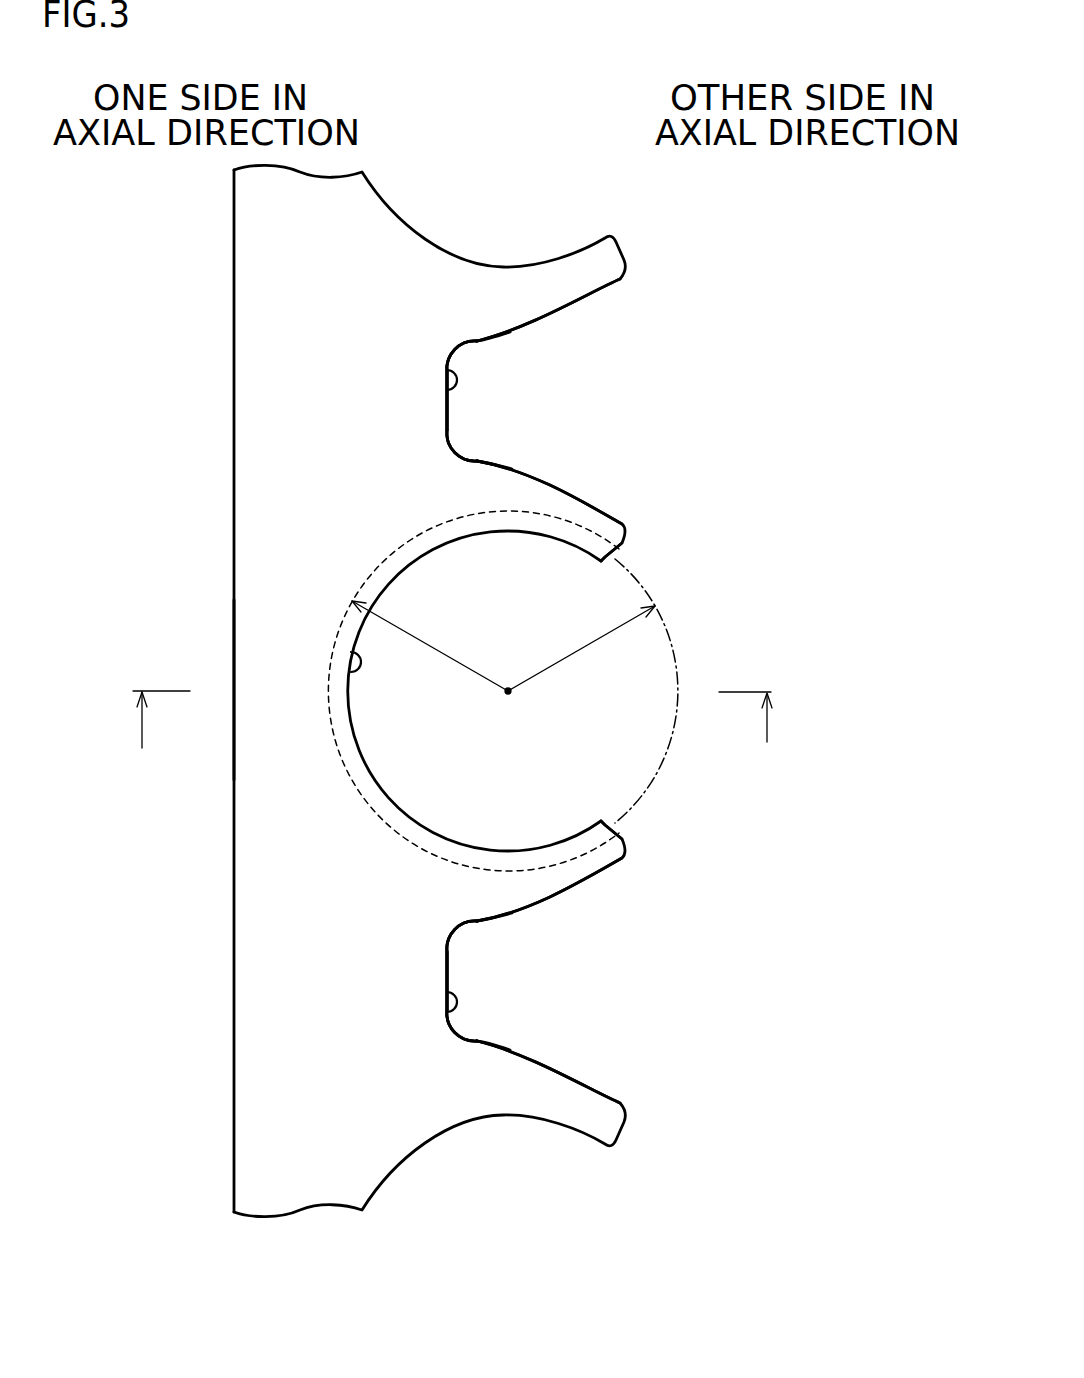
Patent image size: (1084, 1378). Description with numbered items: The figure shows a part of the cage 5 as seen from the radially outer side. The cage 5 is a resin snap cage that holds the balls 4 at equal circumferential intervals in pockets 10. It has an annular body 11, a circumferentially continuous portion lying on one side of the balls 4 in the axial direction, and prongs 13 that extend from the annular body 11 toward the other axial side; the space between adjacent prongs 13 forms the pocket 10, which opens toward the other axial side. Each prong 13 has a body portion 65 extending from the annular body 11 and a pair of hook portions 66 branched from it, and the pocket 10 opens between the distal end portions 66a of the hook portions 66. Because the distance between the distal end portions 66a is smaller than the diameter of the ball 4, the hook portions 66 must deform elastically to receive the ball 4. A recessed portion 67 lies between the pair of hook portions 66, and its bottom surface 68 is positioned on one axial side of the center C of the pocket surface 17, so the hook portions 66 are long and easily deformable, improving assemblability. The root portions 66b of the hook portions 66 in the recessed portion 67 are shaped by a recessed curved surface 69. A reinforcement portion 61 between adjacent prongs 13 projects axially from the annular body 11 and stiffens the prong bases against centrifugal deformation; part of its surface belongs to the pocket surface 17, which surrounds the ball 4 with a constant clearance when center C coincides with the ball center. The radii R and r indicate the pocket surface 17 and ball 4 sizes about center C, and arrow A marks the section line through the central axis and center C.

The ball 4 is at (667, 760).
The cage 5 is at (232, 881).
The pocket 10 is at (636, 672).
The annular body 11 is at (265, 663).
The prong 13 is at (641, 332).
The pocket surface 17 is at (338, 745).
The reinforcement portion 61 is at (350, 653).
The body portion 65 is at (427, 398).
The hook portion 66 is at (543, 308).
The distal end portion 66a is at (602, 562).
The root portion 66b is at (465, 343).
The recessed portion 67 is at (484, 382).
The bottom surface 68 is at (447, 372).
The recessed curved surface 69 is at (487, 340).
The radius R is at (430, 646).
The radius r is at (581, 648).
The center of the pocket surface C is at (512, 694).
The arrow A is at (453, 735).